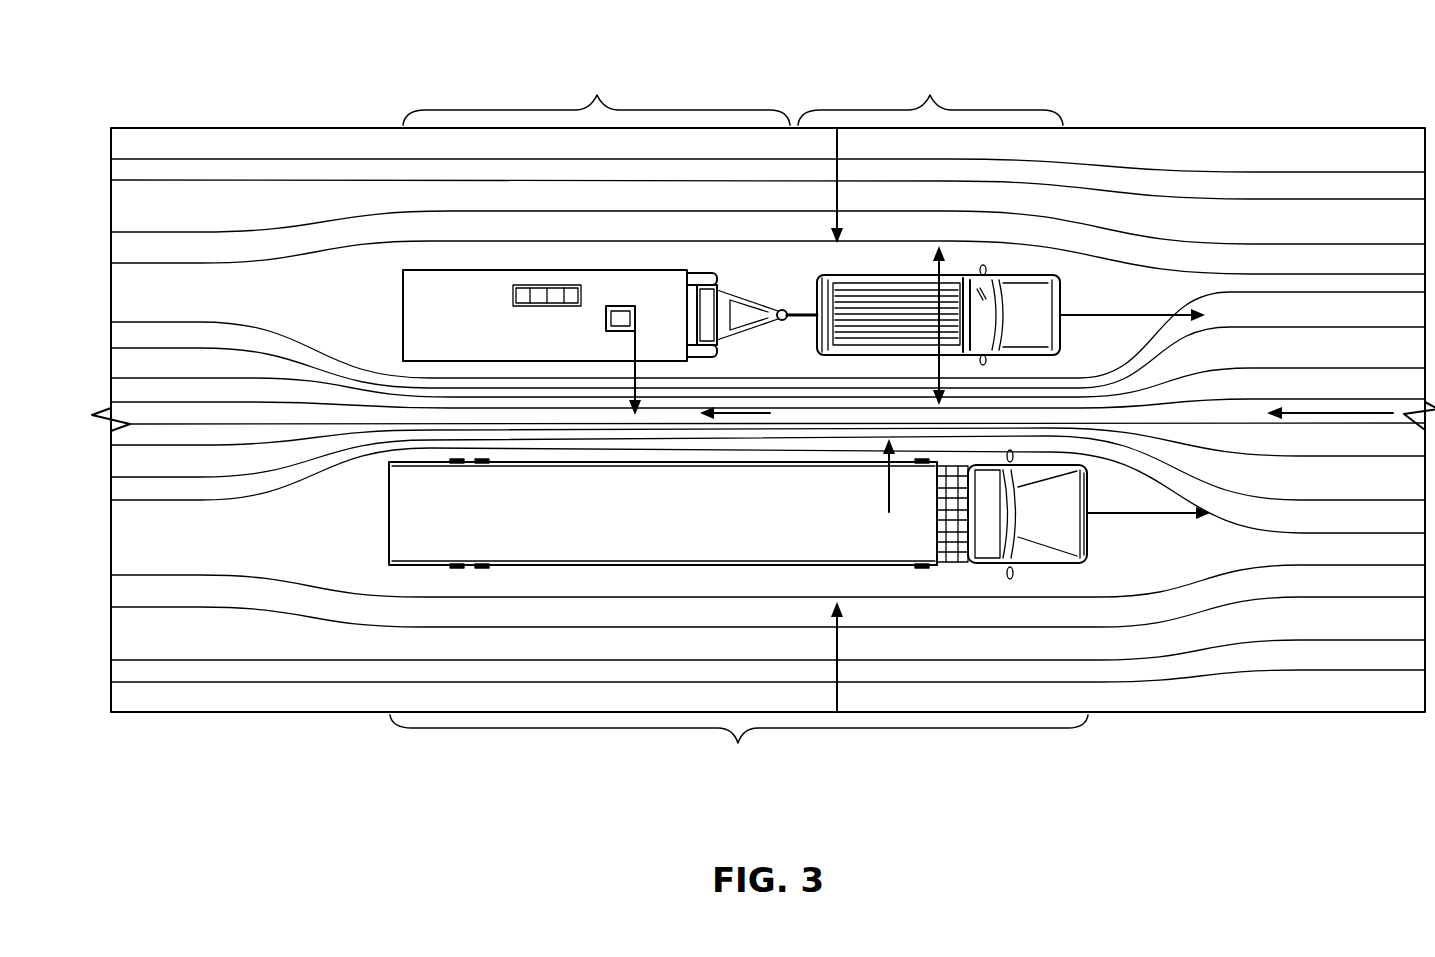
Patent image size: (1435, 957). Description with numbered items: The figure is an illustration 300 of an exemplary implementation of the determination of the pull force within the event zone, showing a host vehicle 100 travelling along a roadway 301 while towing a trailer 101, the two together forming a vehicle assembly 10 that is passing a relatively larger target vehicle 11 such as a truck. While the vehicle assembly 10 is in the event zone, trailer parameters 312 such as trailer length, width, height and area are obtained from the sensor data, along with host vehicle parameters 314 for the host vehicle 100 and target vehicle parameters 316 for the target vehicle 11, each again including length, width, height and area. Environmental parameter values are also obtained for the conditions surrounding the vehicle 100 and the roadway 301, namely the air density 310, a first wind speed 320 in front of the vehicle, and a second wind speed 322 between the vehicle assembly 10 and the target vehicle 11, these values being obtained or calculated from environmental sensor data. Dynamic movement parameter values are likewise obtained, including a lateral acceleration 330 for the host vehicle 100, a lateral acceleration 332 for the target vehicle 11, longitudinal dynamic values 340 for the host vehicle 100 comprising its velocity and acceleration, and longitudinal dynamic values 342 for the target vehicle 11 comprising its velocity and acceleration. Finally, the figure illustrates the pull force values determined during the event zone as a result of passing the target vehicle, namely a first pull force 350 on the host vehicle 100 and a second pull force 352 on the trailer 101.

The illustration 300 is at (1257, 76).
The roadway 301 is at (1170, 367).
The vehicle assembly 10 is at (1070, 350).
The target vehicle 11 is at (418, 545).
The vehicle 100 is at (1040, 292).
The trailer 101 is at (431, 288).
The air density 310 is at (837, 175).
The trailer parameters 312 is at (597, 95).
The host vehicle parameters 314 is at (930, 95).
The target vehicle parameters 316 is at (738, 743).
The first wind speed 320 is at (1360, 413).
The second wind speed 322 is at (742, 413).
The lateral acceleration for the host vehicle 330 is at (939, 260).
The lateral acceleration for the target vehicle 332 is at (889, 455).
The longitudinal dynamic values for the host vehicle 340 is at (1130, 315).
The longitudinal dynamic values for the target vehicle 342 is at (1115, 513).
The first pull force 350 is at (939, 385).
The second pull force 352 is at (635, 390).